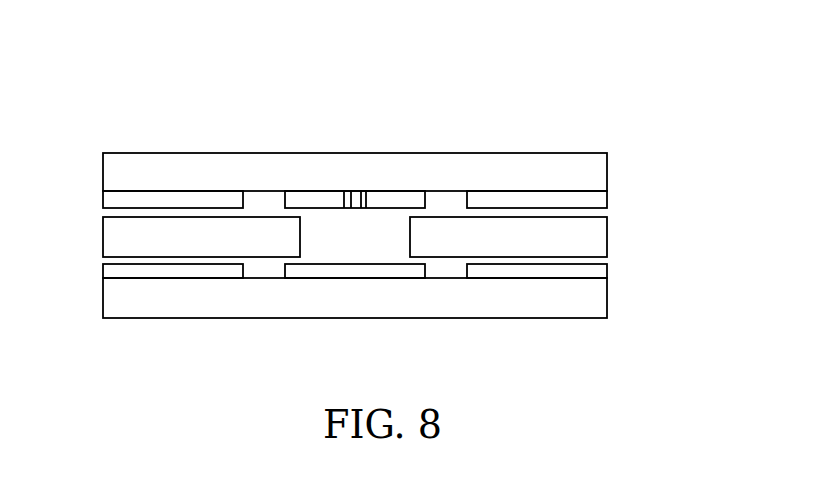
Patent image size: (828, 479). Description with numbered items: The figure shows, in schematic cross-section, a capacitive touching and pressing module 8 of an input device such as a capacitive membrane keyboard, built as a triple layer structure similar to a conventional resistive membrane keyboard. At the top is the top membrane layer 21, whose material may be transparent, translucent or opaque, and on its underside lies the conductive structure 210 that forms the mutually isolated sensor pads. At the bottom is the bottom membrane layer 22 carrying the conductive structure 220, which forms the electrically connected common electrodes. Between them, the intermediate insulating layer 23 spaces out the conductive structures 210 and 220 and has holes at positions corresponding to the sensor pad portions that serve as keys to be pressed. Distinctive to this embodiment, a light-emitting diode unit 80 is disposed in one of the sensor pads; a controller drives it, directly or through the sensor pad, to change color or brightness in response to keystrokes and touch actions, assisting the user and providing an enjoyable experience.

The capacitive touching and pressing module 8 is at (523, 94).
The top membrane layer 21 is at (590, 169).
The conductive structure 210 is at (590, 204).
The light-emitting diode unit 80 is at (354, 198).
The intermediate insulating layer 23 is at (125, 243).
The conductive structure 220 is at (590, 275).
The bottom membrane layer 22 is at (590, 304).